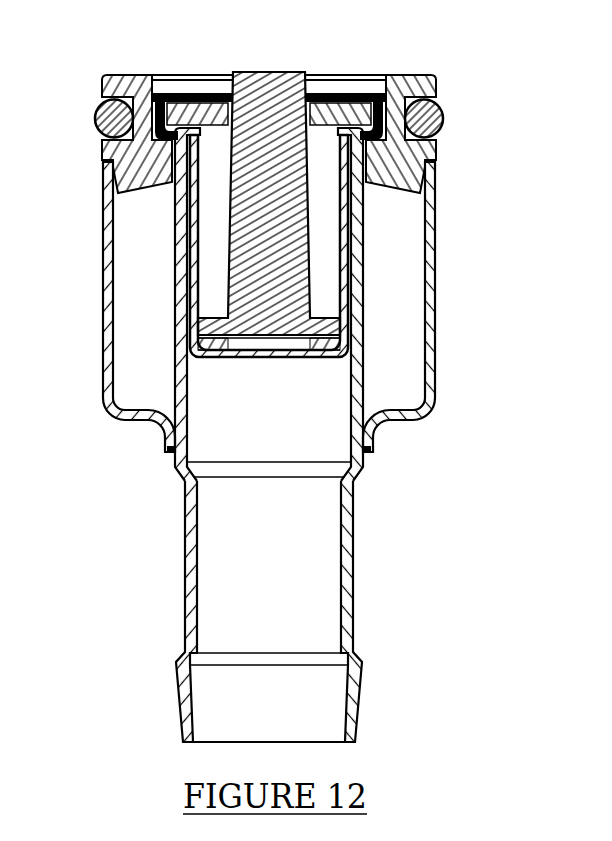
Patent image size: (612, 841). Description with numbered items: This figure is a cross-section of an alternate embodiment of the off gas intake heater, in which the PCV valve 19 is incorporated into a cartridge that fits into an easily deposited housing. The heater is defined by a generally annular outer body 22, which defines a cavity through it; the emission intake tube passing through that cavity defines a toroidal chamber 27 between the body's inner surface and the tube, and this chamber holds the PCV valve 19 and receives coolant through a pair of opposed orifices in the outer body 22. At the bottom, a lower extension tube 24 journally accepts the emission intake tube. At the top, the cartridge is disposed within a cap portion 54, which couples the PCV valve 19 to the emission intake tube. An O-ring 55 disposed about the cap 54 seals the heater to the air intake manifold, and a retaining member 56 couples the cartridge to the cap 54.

The PCV valve 19 is at (340, 261).
The outer body 22 is at (437, 333).
The lower extension tube 24 is at (353, 550).
The toroidal chamber 27 is at (131, 315).
The cap portion 54 is at (408, 77).
The O-ring 55 is at (443, 121).
The retaining member 56 is at (357, 73).